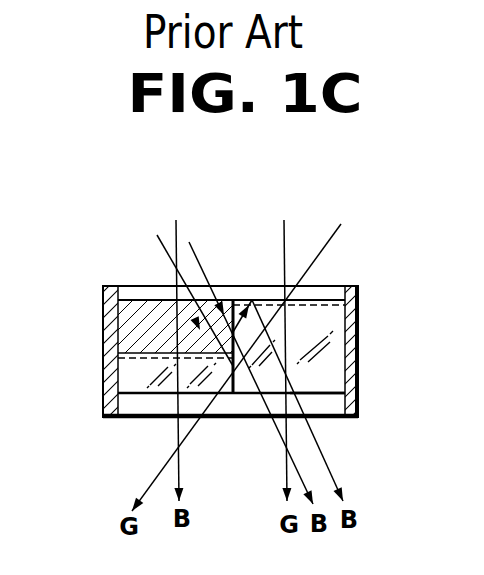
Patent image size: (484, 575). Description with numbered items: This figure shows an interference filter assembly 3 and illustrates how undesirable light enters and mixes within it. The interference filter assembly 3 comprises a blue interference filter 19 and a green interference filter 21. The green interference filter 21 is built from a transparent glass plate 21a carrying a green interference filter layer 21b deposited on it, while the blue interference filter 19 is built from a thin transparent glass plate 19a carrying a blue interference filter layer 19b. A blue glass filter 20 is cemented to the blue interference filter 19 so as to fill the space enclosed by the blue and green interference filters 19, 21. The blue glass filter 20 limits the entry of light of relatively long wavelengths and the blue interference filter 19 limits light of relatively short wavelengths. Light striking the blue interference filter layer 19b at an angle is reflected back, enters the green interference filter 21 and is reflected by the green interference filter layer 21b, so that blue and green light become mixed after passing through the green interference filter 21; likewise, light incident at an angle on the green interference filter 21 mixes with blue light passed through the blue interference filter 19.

The interference filter assembly 3 is at (232, 254).
The blue glass filter 20 is at (143, 298).
The blue interference filter 19 is at (145, 368).
The glass plate 19a is at (112, 389).
The blue interference filter layer 19b is at (135, 350).
The green interference filter 21 is at (322, 339).
The glass plate 21a is at (325, 375).
The green interference filter layer 21b is at (327, 300).